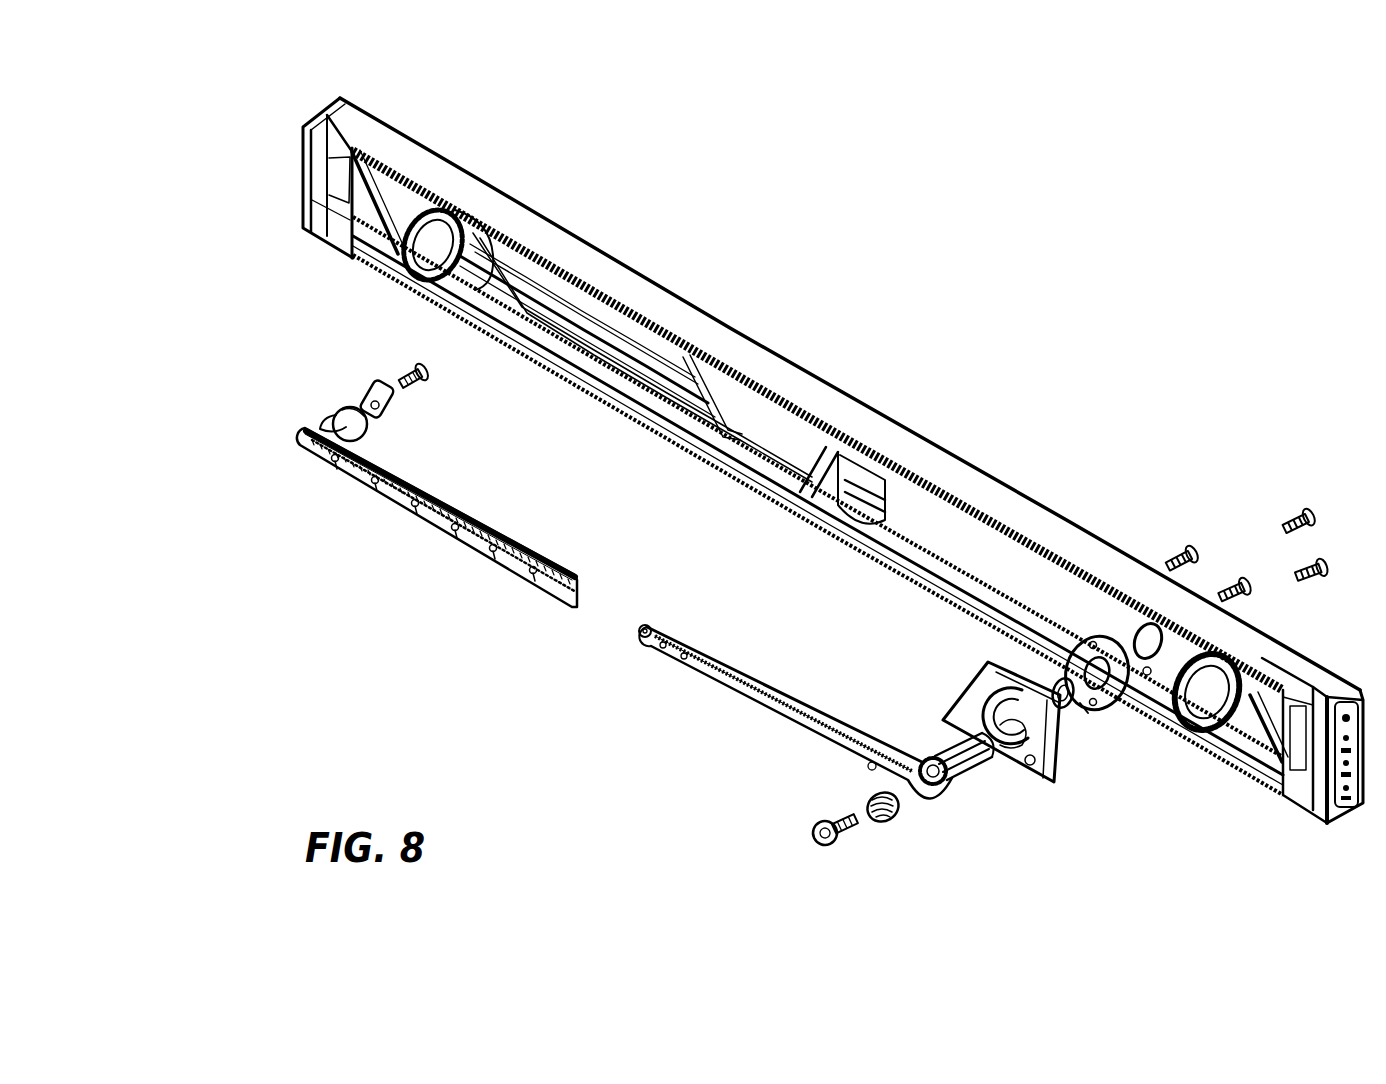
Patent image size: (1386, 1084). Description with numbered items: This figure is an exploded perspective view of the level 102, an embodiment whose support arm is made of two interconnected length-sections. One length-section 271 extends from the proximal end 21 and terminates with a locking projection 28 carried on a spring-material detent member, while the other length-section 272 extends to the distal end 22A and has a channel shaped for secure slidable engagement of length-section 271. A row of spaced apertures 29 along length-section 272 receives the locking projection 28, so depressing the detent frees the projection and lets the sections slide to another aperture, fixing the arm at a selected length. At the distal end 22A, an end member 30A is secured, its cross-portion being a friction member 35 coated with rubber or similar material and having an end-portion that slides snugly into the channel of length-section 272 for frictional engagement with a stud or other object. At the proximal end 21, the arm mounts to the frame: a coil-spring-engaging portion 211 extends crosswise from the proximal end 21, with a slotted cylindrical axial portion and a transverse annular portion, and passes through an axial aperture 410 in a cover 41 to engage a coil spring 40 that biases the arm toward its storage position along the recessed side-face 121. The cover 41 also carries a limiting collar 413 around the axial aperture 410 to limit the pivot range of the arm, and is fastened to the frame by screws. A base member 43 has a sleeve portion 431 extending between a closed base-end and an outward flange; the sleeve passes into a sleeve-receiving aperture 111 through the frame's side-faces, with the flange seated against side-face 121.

The level 102 is at (805, 286).
The side-face 121 is at (1045, 597).
The sleeve-receiving aperture 111 is at (1167, 727).
The distal end 22A is at (383, 563).
The length-section 272 is at (428, 512).
The apertures 29 is at (453, 533).
The friction member 35 is at (333, 408).
The end member 30A is at (327, 352).
The proximal end 21 is at (803, 747).
The length-section 271 is at (723, 680).
The locking projection 28 is at (643, 637).
The coil-spring-engaging portion 211 is at (968, 790).
The cover 41 is at (963, 745).
The limiting collar 413 is at (985, 700).
The axial aperture 410 is at (1008, 752).
The coil spring 40 is at (1068, 713).
The base member 43 is at (1121, 582).
The sleeve portion 431 is at (1104, 638).